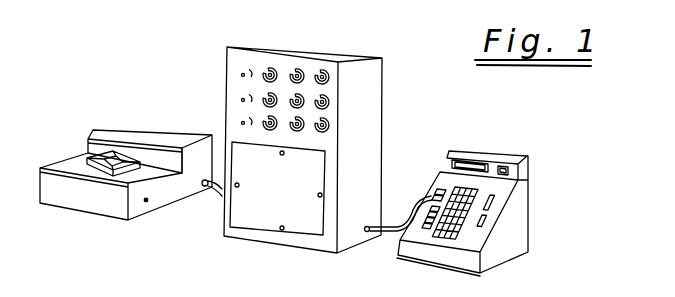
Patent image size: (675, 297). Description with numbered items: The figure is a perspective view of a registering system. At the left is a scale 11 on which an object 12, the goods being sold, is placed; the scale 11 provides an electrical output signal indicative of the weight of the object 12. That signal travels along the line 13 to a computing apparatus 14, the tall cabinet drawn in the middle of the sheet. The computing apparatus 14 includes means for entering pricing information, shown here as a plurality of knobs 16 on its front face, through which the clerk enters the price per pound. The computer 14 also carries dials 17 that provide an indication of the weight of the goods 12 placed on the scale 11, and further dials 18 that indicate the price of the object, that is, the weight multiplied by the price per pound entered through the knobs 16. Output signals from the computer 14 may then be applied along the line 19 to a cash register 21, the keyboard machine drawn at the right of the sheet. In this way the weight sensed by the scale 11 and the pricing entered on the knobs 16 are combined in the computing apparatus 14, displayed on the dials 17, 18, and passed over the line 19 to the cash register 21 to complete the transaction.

The scale 11 is at (145, 130).
The object 12 is at (105, 172).
The line 13 is at (218, 193).
The computing apparatus 14 is at (327, 135).
The knobs 16 is at (324, 71).
The dials 17 is at (328, 105).
The dials 18 is at (321, 132).
The line 19 is at (402, 203).
The cash register 21 is at (528, 198).